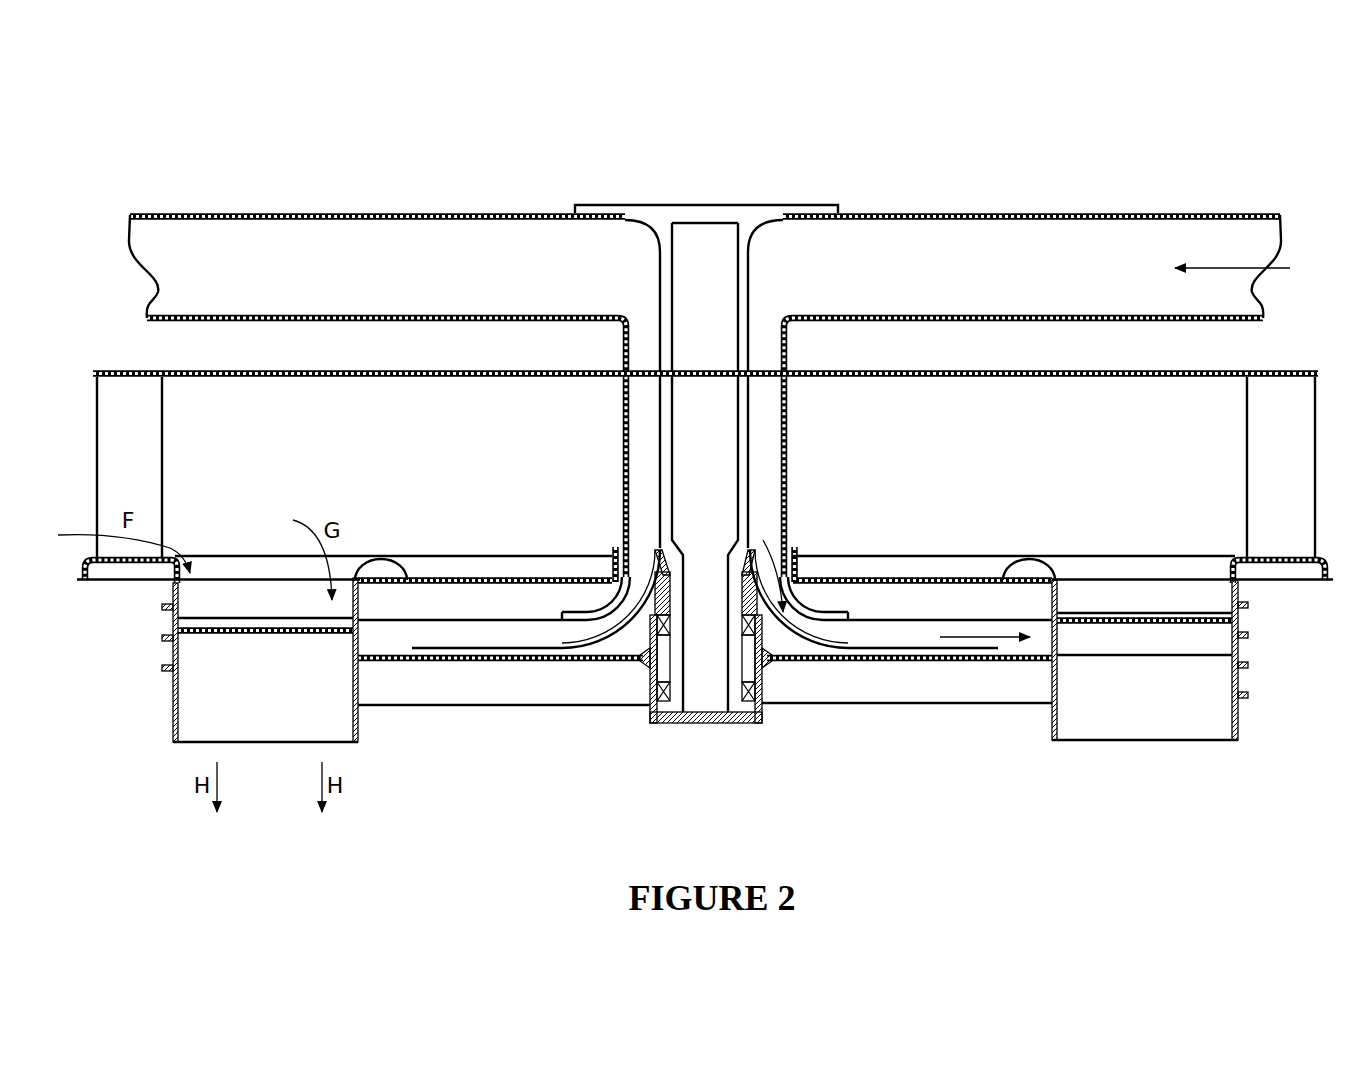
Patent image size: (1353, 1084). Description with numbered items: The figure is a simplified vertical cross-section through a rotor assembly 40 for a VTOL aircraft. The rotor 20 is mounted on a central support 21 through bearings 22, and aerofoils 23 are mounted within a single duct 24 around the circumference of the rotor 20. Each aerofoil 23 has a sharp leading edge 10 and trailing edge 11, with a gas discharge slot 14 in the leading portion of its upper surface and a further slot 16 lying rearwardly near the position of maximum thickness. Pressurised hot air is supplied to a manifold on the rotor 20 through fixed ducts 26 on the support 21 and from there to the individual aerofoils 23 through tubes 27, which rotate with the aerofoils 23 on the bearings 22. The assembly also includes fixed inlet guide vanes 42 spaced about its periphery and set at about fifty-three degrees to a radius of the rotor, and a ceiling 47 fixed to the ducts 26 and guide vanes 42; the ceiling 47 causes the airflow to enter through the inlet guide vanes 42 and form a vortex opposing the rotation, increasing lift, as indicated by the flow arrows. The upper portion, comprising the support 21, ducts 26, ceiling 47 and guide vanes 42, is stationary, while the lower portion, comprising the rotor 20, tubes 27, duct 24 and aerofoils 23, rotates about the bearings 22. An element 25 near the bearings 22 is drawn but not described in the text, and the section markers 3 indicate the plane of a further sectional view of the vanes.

The rotor assembly 40 is at (581, 163).
The fixed ducts 26 is at (500, 258).
The central support 21 is at (715, 263).
The ceiling 47 is at (290, 370).
The inlet guide vanes 42 is at (117, 397).
The rotor 20 is at (507, 553).
The tubes 27 is at (550, 637).
The bearing hub with curved guide walls 25 is at (768, 687).
The gas discharge slot 14 is at (1248, 637).
The leading edge 10 is at (1248, 667).
The slot 16 is at (200, 630).
The aerofoils 23 is at (257, 710).
The trailing edge 11 is at (333, 742).
The duct 24 is at (233, 540).
The bearings 22 is at (701, 675).
The section line 3- 3 is at (78, 517).